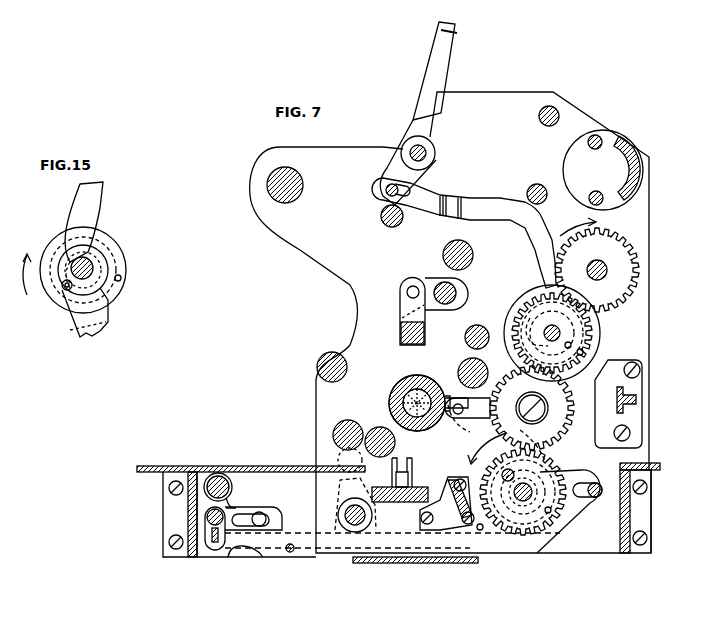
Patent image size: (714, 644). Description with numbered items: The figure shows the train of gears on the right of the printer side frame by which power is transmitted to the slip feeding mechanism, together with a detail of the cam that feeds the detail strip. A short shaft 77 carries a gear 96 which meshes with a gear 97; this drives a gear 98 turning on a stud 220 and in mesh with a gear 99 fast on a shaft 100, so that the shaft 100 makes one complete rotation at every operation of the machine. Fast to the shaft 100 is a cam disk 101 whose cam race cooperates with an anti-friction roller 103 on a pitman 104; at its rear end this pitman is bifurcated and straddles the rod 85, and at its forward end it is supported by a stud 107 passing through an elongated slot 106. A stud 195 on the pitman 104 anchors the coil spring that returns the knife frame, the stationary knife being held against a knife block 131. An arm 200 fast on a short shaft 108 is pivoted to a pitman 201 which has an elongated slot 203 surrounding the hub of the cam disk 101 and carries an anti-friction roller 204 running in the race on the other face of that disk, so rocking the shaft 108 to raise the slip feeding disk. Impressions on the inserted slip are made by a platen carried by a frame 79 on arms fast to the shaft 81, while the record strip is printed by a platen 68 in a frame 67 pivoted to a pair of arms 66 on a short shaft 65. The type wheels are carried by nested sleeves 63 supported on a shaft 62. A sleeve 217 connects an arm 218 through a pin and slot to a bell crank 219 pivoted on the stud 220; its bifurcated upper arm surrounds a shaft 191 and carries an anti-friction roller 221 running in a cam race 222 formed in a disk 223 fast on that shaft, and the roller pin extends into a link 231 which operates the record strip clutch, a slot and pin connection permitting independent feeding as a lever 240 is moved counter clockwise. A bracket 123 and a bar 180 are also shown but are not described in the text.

In FIG. 7, the lever 240 is at (443, 50).
In FIG. 7, the link 231 is at (485, 208).
In FIG. 15, the link 231 is at (95, 195).
In FIG. 7, the short shaft 77 is at (600, 266).
In FIG. 7, the gear 96 is at (572, 265).
In FIG. 7, the pair of arms 66 is at (428, 283).
In FIG. 7, the short shaft 65 is at (457, 287).
In FIG. 7, the frame 67 is at (407, 308).
In FIG. 7, the platen 68 is at (407, 337).
In FIG. 7, the disk 223 is at (520, 310).
In FIG. 15, the disk 223 is at (108, 238).
In FIG. 7, the shaft 191 is at (549, 339).
In FIG. 15, the shaft 191 is at (95, 266).
In FIG. 7, the anti-friction roller 221 is at (571, 344).
In FIG. 15, the anti-friction roller 221 is at (65, 290).
In FIG. 7, the gear 97 is at (582, 352).
In FIG. 7, the sleeve 217 is at (397, 392).
In FIG. 7, the nested sleeves 63 is at (409, 388).
In FIG. 7, the shaft 62 is at (428, 383).
In FIG. 7, the arm 218 is at (441, 420).
In FIG. 7, the bell crank 219 is at (483, 420).
In FIG. 15, the bell crank 219 is at (108, 326).
In FIG. 7, the gear 98 is at (567, 426).
In FIG. 7, the stud 220 is at (548, 402).
In FIG. 7, the cam disk 101 is at (548, 454).
In FIG. 7, the shaft 100 is at (530, 497).
In FIG. 7, the elongated slot 203 is at (508, 483).
In FIG. 7, the anti-friction roller 103 is at (550, 513).
In FIG. 7, the gear 99 is at (557, 472).
In FIG. 7, the pitman 104 is at (583, 522).
In FIG. 7, the rod 85 is at (595, 500).
In FIG. 7, the bracket 123 is at (160, 467).
In FIG. 7, the short shaft 108 is at (218, 480).
In FIG. 7, the arm 200 is at (230, 503).
In FIG. 7, the elongated slot 106 is at (254, 515).
In FIG. 7, the stud 107 is at (266, 519).
In FIG. 7, the pitman 201 is at (243, 549).
In FIG. 7, the stud 195 is at (288, 552).
In FIG. 7, the shaft 81 is at (348, 510).
In FIG. 7, the frame 79 is at (400, 502).
In FIG. 7, the knife block 131 is at (448, 513).
In FIG. 7, the anti-friction roller 204 is at (481, 530).
In FIG. 7, the bar 180 is at (445, 562).
In FIG. 15, the cam race 222 is at (122, 278).